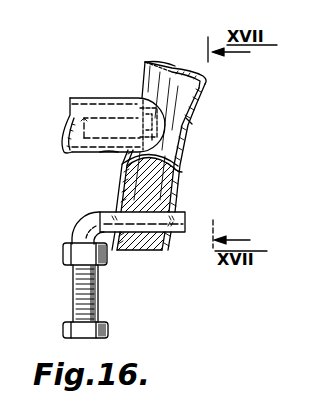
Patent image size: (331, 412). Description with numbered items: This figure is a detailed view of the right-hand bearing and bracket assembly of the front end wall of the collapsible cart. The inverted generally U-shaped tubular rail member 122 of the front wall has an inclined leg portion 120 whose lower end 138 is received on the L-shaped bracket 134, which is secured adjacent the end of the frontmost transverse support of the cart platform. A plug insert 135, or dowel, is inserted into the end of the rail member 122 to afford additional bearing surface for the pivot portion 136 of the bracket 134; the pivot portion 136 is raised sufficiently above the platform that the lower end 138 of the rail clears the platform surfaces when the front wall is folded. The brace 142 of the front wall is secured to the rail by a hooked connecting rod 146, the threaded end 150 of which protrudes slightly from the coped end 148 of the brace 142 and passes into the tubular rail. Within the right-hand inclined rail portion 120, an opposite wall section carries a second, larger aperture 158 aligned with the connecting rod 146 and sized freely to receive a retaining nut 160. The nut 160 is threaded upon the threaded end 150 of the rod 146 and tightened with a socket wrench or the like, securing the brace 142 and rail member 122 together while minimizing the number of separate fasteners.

The inclined leg portion 120 is at (176, 152).
The rail member 122 is at (262, 88).
The L-shaped bracket 134 is at (71, 231).
The plug insert 135 is at (182, 170).
The pivot portion 136 is at (97, 212).
The lower end 138 is at (138, 250).
The brace 142 is at (118, 98).
The connecting rod 146 is at (86, 99).
The coped end 148 is at (157, 66).
The threaded end 150 is at (108, 158).
The aperture 158 is at (193, 122).
The retaining nut 160 is at (152, 137).